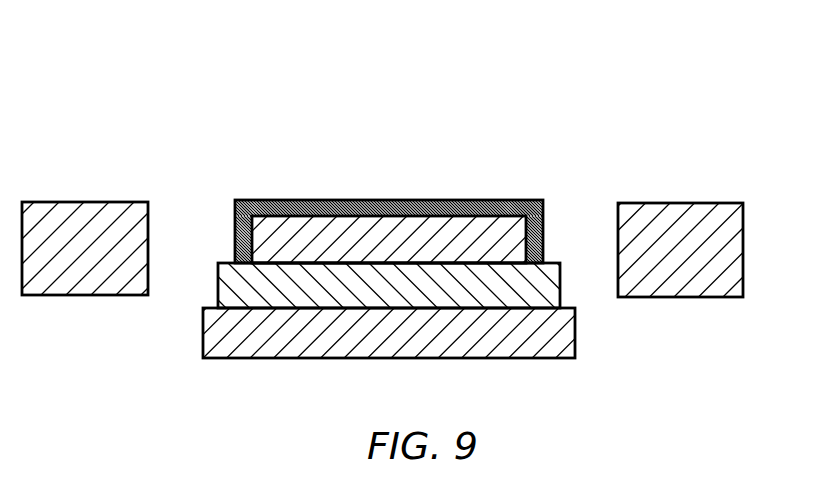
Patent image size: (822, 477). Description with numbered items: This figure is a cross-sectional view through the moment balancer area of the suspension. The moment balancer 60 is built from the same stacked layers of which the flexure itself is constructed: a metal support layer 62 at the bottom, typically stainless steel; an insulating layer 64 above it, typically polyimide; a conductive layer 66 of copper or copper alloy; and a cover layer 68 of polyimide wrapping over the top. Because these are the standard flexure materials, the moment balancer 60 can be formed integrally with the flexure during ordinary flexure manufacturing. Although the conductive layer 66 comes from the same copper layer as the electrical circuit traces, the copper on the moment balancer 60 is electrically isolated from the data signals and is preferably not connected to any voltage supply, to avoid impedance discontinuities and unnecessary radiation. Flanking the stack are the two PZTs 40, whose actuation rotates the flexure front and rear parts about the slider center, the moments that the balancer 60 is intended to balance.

The moment balancer 60 is at (600, 130).
The metal support layer 62 is at (575, 343).
The insulating layer 64 is at (560, 285).
The conductive layer 66 is at (514, 225).
The cover layer 68 is at (415, 200).
The PZT 40 is at (98, 202).